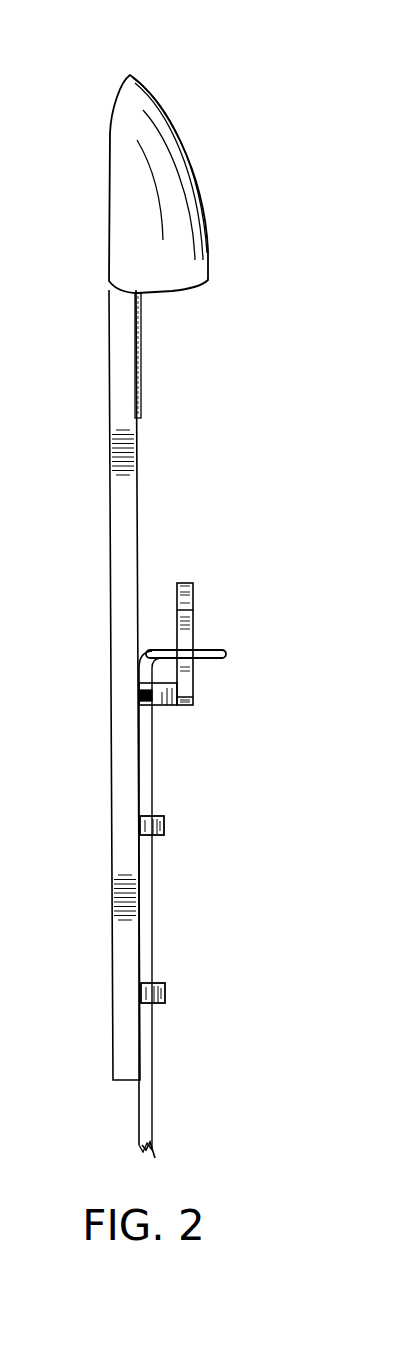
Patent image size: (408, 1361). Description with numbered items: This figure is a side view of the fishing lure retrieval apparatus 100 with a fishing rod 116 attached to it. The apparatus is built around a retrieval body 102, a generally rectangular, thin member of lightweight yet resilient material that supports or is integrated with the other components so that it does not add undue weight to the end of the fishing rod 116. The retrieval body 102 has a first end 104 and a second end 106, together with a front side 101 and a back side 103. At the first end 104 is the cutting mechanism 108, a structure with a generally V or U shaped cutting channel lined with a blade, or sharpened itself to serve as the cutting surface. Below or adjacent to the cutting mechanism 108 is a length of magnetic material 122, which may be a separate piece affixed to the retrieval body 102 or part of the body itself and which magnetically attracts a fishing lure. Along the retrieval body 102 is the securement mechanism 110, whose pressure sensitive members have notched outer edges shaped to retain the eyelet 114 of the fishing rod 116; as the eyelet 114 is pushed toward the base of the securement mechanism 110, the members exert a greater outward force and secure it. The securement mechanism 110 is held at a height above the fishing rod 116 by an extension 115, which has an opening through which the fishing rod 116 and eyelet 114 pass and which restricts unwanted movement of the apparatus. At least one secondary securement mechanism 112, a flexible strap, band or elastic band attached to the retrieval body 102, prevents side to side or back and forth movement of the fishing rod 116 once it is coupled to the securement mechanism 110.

The fishing lure retrieval apparatus 100 is at (199, 24).
The front side 101 is at (136, 505).
The retrieval body 102 is at (89, 531).
The back side 103 is at (110, 408).
The first end 104 is at (94, 89).
The second end 106 is at (86, 1109).
The cutting mechanism 108 is at (221, 201).
The securement mechanism 110 is at (185, 683).
The secondary securement mechanism 112 is at (165, 824).
The eyelet 114 is at (227, 655).
The extension 115 is at (165, 706).
The fishing rod 116 is at (157, 1113).
The length of magnetic material 122 is at (140, 383).